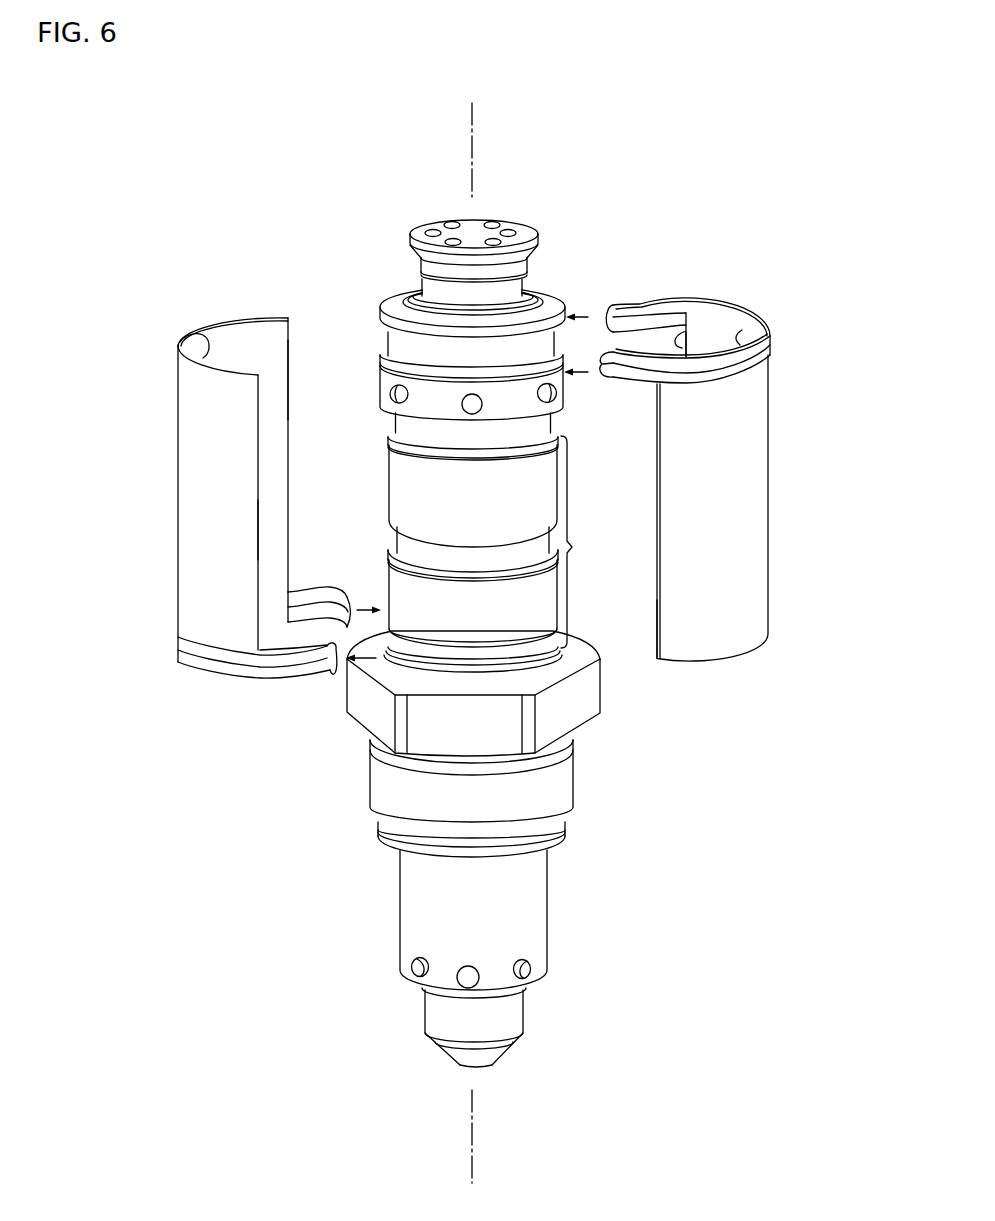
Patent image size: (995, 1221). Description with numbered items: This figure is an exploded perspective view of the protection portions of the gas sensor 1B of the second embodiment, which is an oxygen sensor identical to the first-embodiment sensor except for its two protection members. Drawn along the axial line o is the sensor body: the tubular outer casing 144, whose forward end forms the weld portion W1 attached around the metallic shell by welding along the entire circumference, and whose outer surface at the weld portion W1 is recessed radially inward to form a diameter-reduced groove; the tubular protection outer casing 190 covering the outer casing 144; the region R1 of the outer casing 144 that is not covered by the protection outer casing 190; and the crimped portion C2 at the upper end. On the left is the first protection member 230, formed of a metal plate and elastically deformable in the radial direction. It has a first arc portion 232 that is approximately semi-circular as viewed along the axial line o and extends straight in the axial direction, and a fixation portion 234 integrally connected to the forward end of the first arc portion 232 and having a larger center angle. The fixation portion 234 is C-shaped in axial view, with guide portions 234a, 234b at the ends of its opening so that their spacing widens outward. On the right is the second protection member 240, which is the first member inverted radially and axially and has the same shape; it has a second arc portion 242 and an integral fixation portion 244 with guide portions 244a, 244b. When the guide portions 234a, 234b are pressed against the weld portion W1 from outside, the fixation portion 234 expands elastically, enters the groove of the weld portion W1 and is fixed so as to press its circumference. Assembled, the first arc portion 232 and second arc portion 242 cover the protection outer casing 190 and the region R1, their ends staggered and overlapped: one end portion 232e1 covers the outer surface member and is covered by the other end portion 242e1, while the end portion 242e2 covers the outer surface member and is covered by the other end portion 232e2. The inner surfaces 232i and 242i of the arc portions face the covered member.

The gas sensor 1B is at (803, 707).
The outer casing 144 is at (540, 647).
The protection outer casing 190 is at (553, 466).
The first protection member 230 is at (211, 308).
The first arc portion 232 is at (188, 515).
The inner surface of the first arc portion 232i is at (178, 342).
The one end portion of the first arc portion 232e1 is at (250, 512).
The other end portion of the first arc portion 232e2 is at (288, 382).
The fixation portion 234 is at (278, 681).
The guide portion 234a is at (333, 678).
The guide portion 234b is at (335, 594).
The second protection member 240 is at (688, 268).
The second arc portion 242 is at (752, 490).
The inner surface of the second arc portion 242i is at (745, 335).
The other end portion of the second arc portion 242e1 is at (657, 664).
The one end portion of the second arc portion 242e2 is at (678, 338).
The fixation portion 244 is at (678, 309).
The guide portion 244a is at (613, 304).
The guide portion 244b is at (609, 380).
The crimped portion C2 is at (553, 343).
The region of the outer casing R1 is at (581, 542).
The weld portion W1 is at (502, 628).
The axial line o is at (475, 1132).